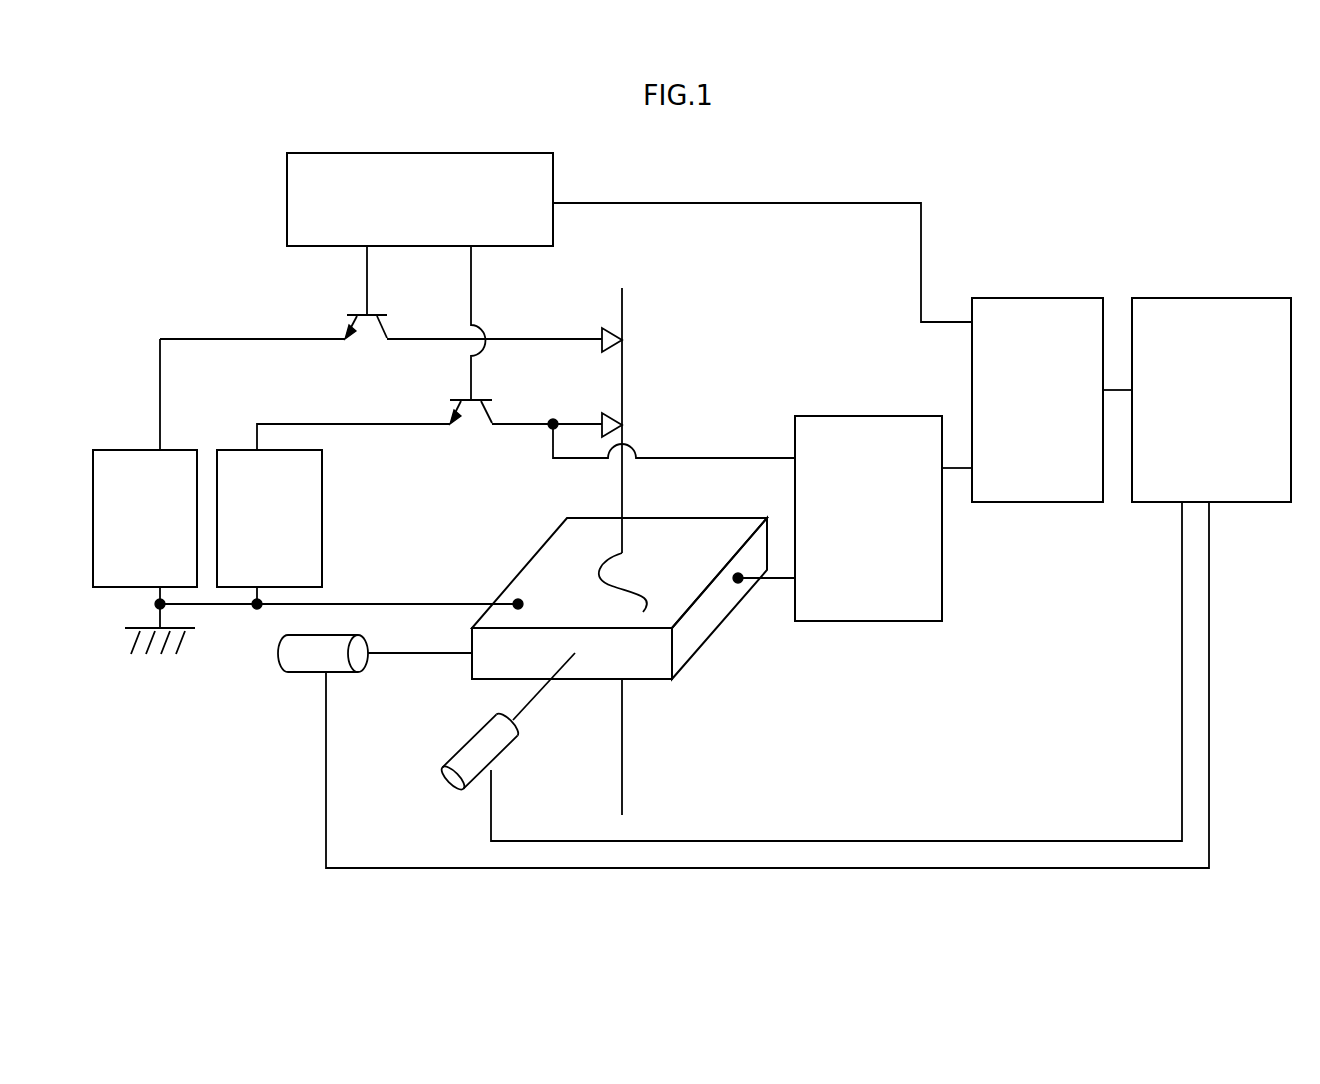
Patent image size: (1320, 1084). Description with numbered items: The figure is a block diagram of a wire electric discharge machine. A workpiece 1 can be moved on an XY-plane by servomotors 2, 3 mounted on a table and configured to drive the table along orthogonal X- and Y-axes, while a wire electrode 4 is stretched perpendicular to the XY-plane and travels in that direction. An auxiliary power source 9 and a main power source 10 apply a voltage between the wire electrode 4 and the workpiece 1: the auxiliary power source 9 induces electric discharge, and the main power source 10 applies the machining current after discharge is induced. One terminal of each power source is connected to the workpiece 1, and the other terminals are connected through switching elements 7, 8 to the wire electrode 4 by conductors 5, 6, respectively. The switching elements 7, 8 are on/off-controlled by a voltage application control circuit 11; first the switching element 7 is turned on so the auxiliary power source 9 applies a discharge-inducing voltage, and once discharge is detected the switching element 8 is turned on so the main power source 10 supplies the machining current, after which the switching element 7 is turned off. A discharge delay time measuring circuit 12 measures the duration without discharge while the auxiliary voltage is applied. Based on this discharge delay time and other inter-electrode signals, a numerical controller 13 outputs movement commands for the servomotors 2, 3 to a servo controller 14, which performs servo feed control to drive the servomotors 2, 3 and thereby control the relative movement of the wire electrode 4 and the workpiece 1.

The workpiece 1 is at (533, 562).
The servomotor 2 is at (278, 652).
The servomotor 3 is at (442, 787).
The wire electrode 4 is at (622, 317).
The conductor 5 is at (612, 415).
The conductor 6 is at (612, 330).
The switching element 7 is at (485, 403).
The switching element 8 is at (360, 314).
The auxiliary power source 9 is at (243, 450).
The main power source 10 is at (145, 450).
The voltage application control circuit 11 is at (372, 153).
The discharge delay time measuring circuit 12 is at (835, 416).
The numerical controller 13 is at (1010, 298).
The servo controller 14 is at (1160, 298).